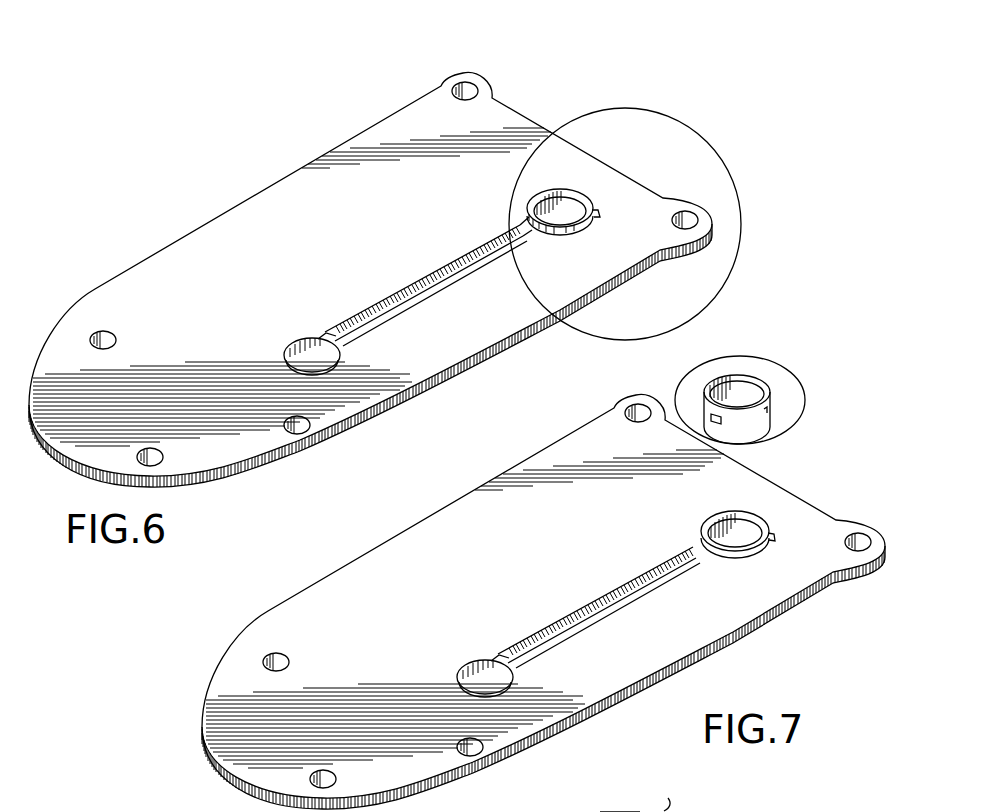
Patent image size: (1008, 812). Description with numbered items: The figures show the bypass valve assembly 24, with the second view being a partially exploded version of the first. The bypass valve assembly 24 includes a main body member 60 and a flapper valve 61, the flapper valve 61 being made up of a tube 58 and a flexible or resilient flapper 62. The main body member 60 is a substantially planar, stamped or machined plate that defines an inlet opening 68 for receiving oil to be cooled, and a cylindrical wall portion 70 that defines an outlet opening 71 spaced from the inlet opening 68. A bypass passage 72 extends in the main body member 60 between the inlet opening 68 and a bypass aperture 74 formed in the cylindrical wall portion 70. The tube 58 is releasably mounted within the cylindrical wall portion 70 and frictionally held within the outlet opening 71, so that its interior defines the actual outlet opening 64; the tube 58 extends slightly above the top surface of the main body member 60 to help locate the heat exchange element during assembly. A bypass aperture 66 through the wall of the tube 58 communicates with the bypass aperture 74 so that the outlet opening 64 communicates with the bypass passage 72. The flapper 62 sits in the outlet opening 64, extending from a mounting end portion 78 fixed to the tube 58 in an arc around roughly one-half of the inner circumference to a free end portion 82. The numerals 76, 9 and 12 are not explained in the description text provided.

In FIG. 6, the bypass valve assembly 24 is at (370, 246).
In FIG. 6, the main body member 60 is at (482, 100).
In FIG. 7, the main body member 60 is at (340, 608).
In FIG. 6, the tube 58 is at (518, 222).
In FIG. 6, the flapper 62 is at (712, 140).
In FIG. 6, the outlet opening 64 is at (608, 175).
In FIG. 6, the outlet opening 71 is at (560, 188).
In FIG. 7, the outlet opening 71 is at (760, 523).
In FIG. 6, the bypass aperture 66 is at (518, 228).
In FIG. 6, the bypass passage 72 is at (438, 258).
In FIG. 7, the bypass passage 72 is at (633, 572).
In FIG. 6, the flapper valve 61 is at (563, 231).
In FIG. 7, the flapper valve 61 is at (745, 375).
In FIG. 6, the groove 76 is at (517, 257).
In FIG. 6, the inlet opening 68 is at (297, 332).
In FIG. 7, the inlet opening 68 is at (475, 645).
In FIG. 6, the detail view reference 9 is at (658, 208).
In FIG. 7, the bushing detail region 12 is at (788, 574).
In FIG. 7, the cylindrical wall portion 70 is at (753, 504).
In FIG. 7, the bypass aperture 74 is at (762, 497).
In FIG. 7, the free end portion 82 is at (622, 810).
In FIG. 7, the mounting end portion 78 is at (667, 810).